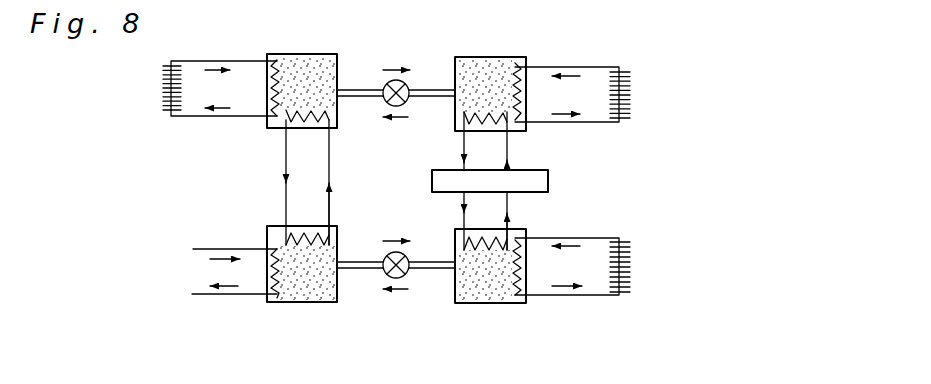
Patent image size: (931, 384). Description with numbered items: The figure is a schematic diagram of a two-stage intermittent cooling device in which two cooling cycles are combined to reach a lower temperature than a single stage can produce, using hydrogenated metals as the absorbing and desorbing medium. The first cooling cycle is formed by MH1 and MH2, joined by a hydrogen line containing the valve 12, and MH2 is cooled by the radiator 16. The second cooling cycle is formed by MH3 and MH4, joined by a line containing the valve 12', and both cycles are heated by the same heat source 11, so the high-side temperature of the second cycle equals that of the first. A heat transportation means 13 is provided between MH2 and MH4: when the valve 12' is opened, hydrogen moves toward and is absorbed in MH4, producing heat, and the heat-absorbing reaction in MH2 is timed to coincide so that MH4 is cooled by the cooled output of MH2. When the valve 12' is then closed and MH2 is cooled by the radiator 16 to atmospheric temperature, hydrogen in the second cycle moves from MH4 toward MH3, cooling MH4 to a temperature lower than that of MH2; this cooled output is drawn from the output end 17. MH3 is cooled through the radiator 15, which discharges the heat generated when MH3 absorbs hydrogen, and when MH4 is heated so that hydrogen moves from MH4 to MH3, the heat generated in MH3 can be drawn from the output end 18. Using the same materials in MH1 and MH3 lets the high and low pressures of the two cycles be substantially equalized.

The heat source 11 is at (548, 181).
The valve 12 is at (396, 115).
The valve 12' is at (396, 285).
The heat transportation means 13 is at (283, 155).
The radiator 15 is at (628, 247).
The radiator 16 is at (163, 90).
The output end 17 is at (218, 271).
The output end 18 is at (628, 90).
The hydrogenated metal MH1 is at (497, 62).
The hydrogenated metal MH2 is at (308, 60).
The hydrogenated metal MH3 is at (493, 297).
The hydrogenated metal MH4 is at (307, 295).